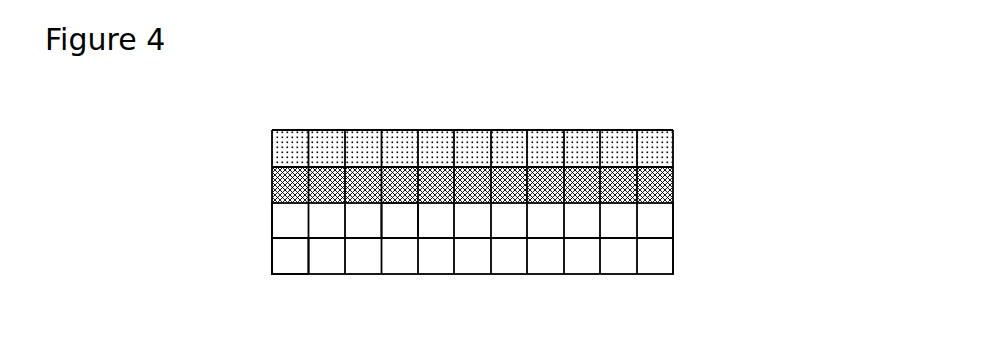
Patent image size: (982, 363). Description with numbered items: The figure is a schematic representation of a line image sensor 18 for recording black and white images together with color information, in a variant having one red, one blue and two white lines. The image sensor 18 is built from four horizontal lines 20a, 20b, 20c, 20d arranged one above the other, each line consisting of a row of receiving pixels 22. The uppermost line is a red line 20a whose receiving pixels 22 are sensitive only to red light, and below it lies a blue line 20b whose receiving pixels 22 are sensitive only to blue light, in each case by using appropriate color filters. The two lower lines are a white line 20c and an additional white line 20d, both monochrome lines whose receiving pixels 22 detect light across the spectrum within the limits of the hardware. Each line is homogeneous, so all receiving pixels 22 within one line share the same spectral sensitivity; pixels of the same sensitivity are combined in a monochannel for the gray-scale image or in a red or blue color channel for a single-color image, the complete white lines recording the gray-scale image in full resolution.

The image sensor 18 is at (550, 166).
The red line 20a is at (712, 157).
The blue line 20b is at (712, 193).
The white line 20c is at (712, 229).
The additional white line 20d is at (713, 264).
The receiving pixels 22 is at (663, 155).